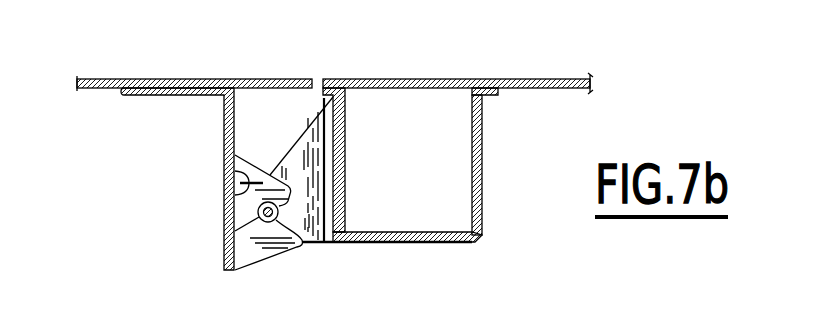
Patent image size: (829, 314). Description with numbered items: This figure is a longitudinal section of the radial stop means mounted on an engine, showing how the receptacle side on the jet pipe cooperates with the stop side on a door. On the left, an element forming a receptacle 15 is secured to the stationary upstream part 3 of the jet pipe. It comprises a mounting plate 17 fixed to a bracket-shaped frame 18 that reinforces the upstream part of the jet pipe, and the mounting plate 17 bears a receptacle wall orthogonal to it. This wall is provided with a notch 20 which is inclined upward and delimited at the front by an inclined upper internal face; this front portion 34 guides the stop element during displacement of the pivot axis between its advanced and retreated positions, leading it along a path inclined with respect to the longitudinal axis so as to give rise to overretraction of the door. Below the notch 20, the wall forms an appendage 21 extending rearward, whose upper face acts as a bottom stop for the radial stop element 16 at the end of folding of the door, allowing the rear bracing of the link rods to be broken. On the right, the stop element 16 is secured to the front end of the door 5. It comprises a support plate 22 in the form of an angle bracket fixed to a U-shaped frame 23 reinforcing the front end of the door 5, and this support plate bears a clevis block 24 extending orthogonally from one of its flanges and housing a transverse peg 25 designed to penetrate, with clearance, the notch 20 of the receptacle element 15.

The stationary upstream part 3 is at (109, 78).
The door 5 is at (434, 79).
The element forming a receptacle 15 is at (249, 145).
The stop element 16 is at (300, 129).
The mounting plate 17 is at (223, 178).
The bracket-shaped frame 18 is at (223, 130).
The notch 20 is at (258, 209).
The appendage 21 is at (290, 249).
The support plate 22 is at (427, 244).
The U-shaped frame 23 is at (477, 198).
The clevis block 24 is at (324, 241).
The transverse peg 25 is at (250, 246).
The front portion 34 is at (263, 216).